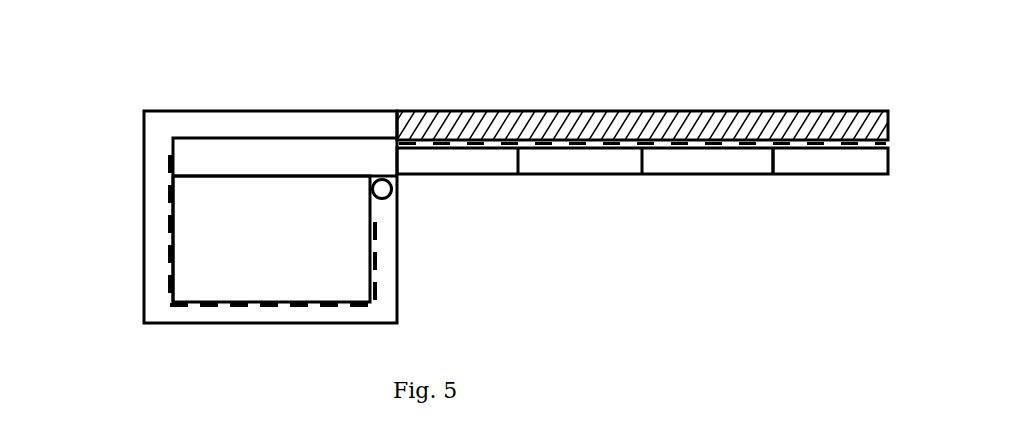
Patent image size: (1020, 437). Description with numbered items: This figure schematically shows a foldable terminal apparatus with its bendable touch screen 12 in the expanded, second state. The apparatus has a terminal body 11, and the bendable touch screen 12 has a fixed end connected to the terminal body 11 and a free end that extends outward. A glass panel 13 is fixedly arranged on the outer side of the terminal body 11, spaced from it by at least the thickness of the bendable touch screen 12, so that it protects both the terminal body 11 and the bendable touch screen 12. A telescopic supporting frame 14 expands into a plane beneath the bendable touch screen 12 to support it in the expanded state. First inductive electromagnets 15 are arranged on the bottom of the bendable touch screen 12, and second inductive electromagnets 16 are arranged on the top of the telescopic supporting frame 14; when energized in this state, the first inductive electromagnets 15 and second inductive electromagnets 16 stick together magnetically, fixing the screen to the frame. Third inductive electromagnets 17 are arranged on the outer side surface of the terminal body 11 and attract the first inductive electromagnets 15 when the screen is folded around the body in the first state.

The terminal body 11 is at (286, 228).
The bendable touch screen 12 is at (585, 112).
The glass panel 13 is at (143, 110).
The telescopic supporting frame 14 is at (475, 158).
The first inductive electromagnets 15 is at (706, 140).
The second inductive electromagnets 16 is at (744, 143).
The third inductive electromagnets 17 is at (168, 232).